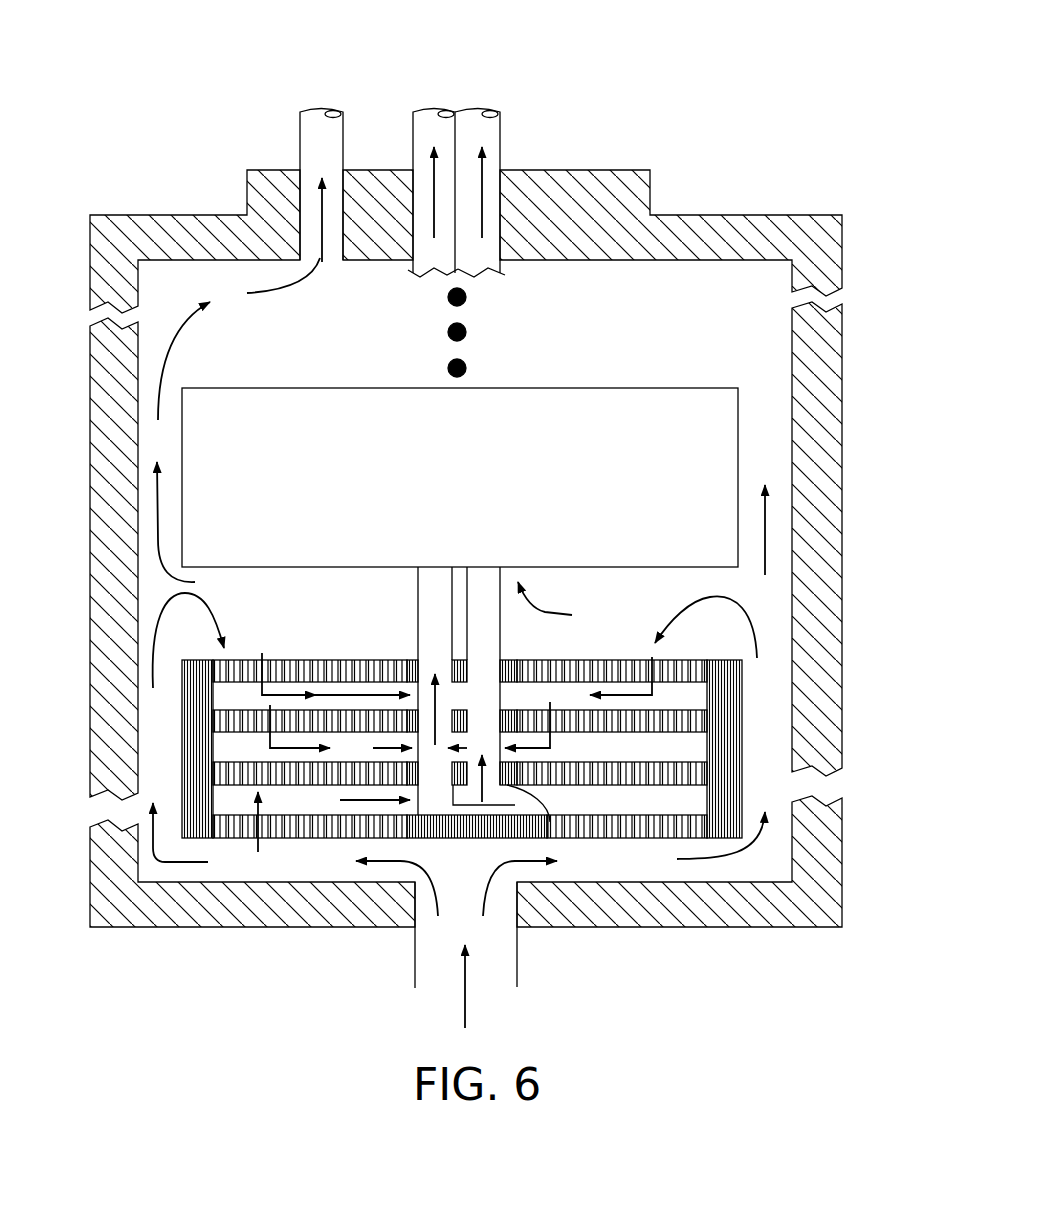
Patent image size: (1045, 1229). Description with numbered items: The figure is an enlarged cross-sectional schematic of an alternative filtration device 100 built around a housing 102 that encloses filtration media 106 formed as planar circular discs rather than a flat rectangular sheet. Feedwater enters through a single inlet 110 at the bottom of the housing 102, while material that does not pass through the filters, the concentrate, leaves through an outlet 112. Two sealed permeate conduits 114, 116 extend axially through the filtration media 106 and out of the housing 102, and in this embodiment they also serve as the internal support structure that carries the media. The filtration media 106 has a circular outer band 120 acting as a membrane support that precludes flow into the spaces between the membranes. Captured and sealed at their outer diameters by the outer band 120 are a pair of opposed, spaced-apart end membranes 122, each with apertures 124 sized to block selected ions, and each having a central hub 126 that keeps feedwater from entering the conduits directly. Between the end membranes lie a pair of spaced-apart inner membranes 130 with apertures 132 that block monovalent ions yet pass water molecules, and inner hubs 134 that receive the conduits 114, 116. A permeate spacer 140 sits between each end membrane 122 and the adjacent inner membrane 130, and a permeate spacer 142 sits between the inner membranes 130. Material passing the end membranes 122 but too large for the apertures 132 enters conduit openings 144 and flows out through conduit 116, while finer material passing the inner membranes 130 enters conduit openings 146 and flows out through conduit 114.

The filtration device 100 is at (627, 89).
The housing 102 is at (851, 480).
The filtration media 106 is at (745, 392).
The inlet 110 is at (517, 963).
The outlet 112 is at (310, 135).
The permeate conduit 114 is at (419, 141).
The permeate conduit 116 is at (495, 133).
The circular outer band 120 is at (742, 770).
The end membrane 122 is at (685, 660).
The apertures 124 is at (307, 673).
The central hub 126 is at (418, 660).
The inner membrane 130 is at (250, 710).
The apertures 132 is at (233, 735).
The inner hub 134 is at (502, 696).
The permeate spacer 140 is at (693, 697).
The permeate spacer 142 is at (688, 748).
The conduit openings 144 is at (502, 693).
The conduit openings 146 is at (338, 788).